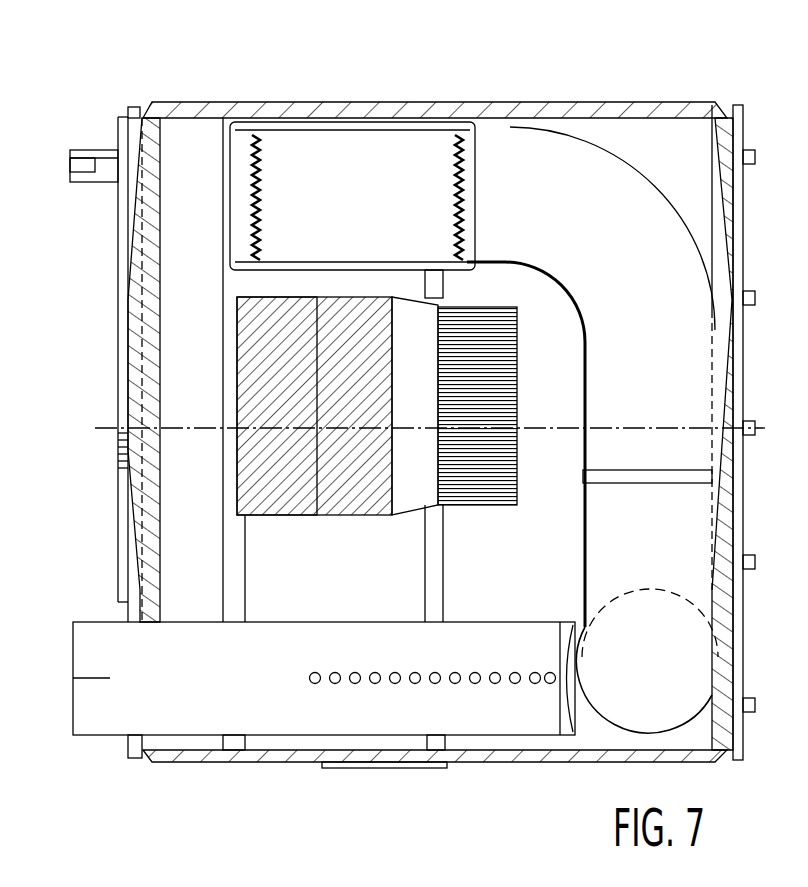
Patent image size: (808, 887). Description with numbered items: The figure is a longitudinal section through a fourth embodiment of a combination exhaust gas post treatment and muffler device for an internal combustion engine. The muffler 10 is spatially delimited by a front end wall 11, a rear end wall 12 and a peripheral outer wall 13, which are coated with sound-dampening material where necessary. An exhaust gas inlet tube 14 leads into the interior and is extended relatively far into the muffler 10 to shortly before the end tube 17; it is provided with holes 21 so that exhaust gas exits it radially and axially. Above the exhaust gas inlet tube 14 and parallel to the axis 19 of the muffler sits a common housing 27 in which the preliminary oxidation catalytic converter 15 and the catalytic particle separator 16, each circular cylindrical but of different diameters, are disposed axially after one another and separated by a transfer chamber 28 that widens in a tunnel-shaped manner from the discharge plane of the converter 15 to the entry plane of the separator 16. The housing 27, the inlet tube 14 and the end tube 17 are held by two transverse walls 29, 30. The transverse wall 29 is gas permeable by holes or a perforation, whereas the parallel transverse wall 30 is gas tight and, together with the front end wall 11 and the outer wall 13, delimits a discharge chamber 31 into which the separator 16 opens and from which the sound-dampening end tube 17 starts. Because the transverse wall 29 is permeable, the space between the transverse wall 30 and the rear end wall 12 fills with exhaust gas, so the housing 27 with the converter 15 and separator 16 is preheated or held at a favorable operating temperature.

The muffler 10 is at (608, 100).
The front end wall 11 is at (117, 320).
The rear end wall 12 is at (735, 190).
The peripheral outer wall 13 is at (665, 110).
The exhaust gas inlet tube 14 is at (103, 715).
The preliminary oxidation catalytic converter 15 is at (487, 505).
The catalytic particle separator 16 is at (292, 515).
The sound-dampening end tube 17 is at (600, 563).
The axis of the muffler 19 is at (547, 428).
The holes 21 is at (335, 684).
The housing 27 is at (347, 517).
The transfer chamber 28 is at (407, 505).
The transverse wall 29 is at (445, 598).
The transverse wall 30 is at (232, 575).
The discharge chamber 31 is at (193, 135).